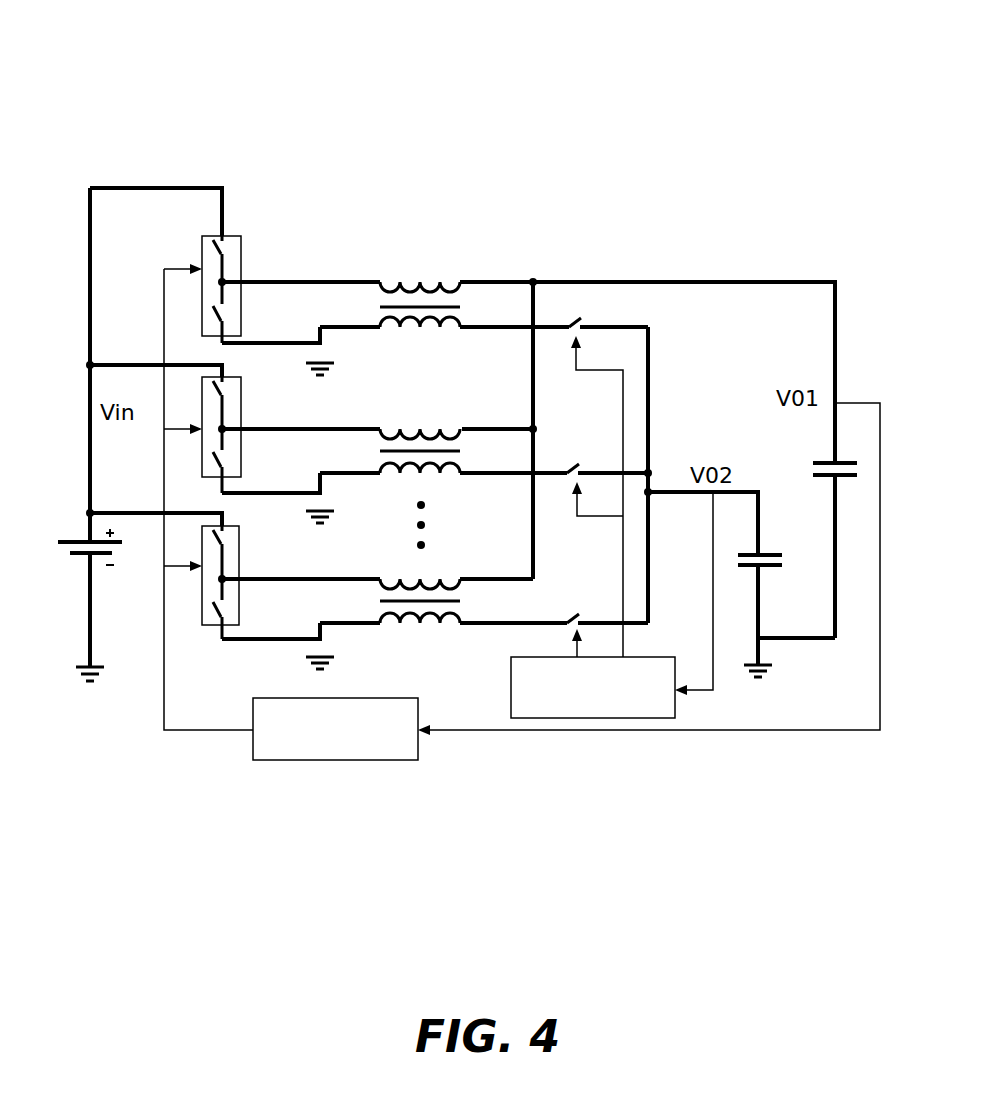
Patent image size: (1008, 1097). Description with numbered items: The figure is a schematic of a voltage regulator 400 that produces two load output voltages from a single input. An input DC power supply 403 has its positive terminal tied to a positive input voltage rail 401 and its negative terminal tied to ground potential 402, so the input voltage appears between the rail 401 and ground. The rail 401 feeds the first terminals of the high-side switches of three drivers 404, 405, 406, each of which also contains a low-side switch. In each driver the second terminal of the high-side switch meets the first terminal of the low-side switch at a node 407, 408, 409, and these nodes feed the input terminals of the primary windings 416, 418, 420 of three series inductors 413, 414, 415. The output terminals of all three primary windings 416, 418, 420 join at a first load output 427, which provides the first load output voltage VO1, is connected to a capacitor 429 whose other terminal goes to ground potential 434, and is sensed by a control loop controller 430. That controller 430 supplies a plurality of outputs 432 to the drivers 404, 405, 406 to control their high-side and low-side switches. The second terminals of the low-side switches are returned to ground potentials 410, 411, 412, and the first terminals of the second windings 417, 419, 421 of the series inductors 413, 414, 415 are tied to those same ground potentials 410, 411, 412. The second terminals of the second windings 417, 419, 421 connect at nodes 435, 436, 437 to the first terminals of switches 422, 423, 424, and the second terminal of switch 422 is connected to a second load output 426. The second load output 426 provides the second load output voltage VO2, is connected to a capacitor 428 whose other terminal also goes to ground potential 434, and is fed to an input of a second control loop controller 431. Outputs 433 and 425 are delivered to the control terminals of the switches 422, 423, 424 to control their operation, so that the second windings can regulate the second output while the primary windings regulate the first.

The power converter 400 is at (812, 78).
The positive input voltage rail 401 is at (90, 280).
The ground potential 402 is at (93, 613).
The input DC power supply 403 is at (73, 540).
The driver 404 is at (243, 262).
The driver 405 is at (243, 418).
The driver 406 is at (238, 558).
The node 407 is at (313, 280).
The node 408 is at (320, 432).
The node 409 is at (305, 583).
The ground potential 410 is at (342, 327).
The ground potential 411 is at (333, 477).
The ground potential 412 is at (350, 625).
The series inductor 413 is at (448, 297).
The series inductor 414 is at (448, 442).
The series inductor 415 is at (449, 603).
The primary winding 416 is at (420, 285).
The second winding 417 is at (427, 322).
The primary winding 418 is at (418, 432).
The second winding 419 is at (430, 470).
The primary winding 420 is at (402, 525).
The second winding 421 is at (418, 625).
The switch 422 is at (578, 320).
The switch 423 is at (578, 472).
The switch 424 is at (578, 620).
The output 425 is at (623, 395).
The second load output 426 is at (648, 405).
The first load output 427 is at (775, 282).
The capacitor 428 is at (770, 553).
The capacitor 429 is at (815, 462).
The control loop controller 430 is at (343, 755).
The control loop controller 431 is at (608, 718).
The outputs 432 is at (200, 730).
The output 433 is at (572, 640).
The ground potential 434 is at (800, 640).
The node 435 is at (478, 325).
The node 436 is at (478, 473).
The node 437 is at (480, 623).